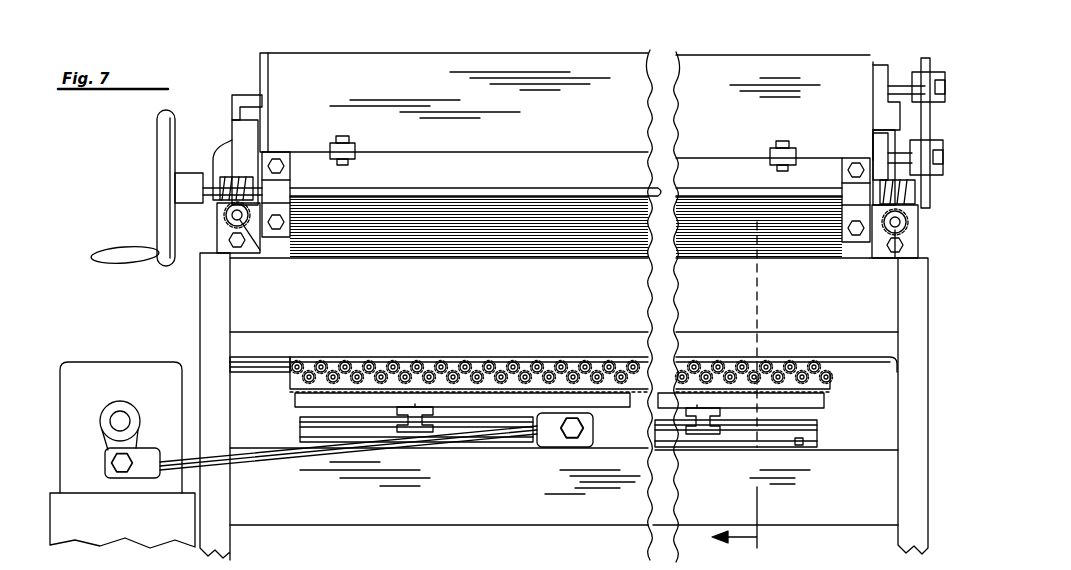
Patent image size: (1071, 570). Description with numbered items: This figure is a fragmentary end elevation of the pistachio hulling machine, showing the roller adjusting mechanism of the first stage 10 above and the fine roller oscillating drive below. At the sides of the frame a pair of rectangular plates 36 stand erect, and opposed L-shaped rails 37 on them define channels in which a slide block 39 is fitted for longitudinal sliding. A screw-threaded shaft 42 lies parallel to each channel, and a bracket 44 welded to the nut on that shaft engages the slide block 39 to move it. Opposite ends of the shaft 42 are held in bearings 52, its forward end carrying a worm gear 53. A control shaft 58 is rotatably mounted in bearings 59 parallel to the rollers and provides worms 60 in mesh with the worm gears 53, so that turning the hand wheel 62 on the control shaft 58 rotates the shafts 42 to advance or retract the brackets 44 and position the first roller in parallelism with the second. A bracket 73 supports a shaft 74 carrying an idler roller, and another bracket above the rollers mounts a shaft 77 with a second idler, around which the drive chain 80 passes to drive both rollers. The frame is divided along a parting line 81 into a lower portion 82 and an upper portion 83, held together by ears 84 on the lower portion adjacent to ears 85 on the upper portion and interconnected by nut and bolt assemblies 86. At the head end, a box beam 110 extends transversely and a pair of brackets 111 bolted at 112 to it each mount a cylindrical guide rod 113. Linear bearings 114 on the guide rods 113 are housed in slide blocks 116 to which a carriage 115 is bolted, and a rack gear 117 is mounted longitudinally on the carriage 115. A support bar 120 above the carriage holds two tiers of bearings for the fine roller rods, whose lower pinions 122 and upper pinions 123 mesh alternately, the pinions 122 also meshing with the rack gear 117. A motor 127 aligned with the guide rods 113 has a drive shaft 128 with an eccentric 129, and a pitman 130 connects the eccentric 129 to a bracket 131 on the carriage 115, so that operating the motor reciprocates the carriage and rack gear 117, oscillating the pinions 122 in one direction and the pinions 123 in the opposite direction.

The first stage 10 is at (748, 234).
The rectangular plates 36 is at (262, 60).
The L-shaped rails 37 is at (246, 95).
The slide block 39 is at (240, 130).
The screw-threaded shaft 42 is at (262, 252).
The bracket 44 is at (215, 160).
The bearings 52 is at (238, 262).
The worm gear 53 is at (232, 252).
The control shaft 58 is at (470, 190).
The bearings 59 is at (292, 180).
The worms 60 is at (218, 202).
The hand wheel 62 is at (158, 147).
The bracket 73 is at (878, 146).
The shaft 74 is at (948, 160).
The shaft 77 is at (948, 85).
The drive chain 80 is at (932, 130).
The parting line 81 is at (700, 158).
The lower portion 82 is at (748, 186).
The upper portion 83 is at (720, 86).
The ears 84 is at (355, 155).
The ears 85 is at (355, 150).
The nut and bolt assemblies 86 is at (343, 136).
The box beam 110 is at (738, 516).
The brackets 111 is at (300, 432).
The bolts 112 is at (797, 446).
The guide rod 113 is at (297, 414).
The linear bearings 114 is at (430, 434).
The carriage 115 is at (334, 397).
The slide blocks 116 is at (433, 408).
The rack gear 117 is at (292, 358).
The support bar 120 is at (458, 355).
The pinions 122 is at (408, 363).
The pinions 123 is at (563, 363).
The motor 127 is at (175, 528).
The drive shaft 128 is at (120, 418).
The eccentric 129 is at (105, 440).
The pitman 130 is at (378, 445).
The bracket 131 is at (597, 440).